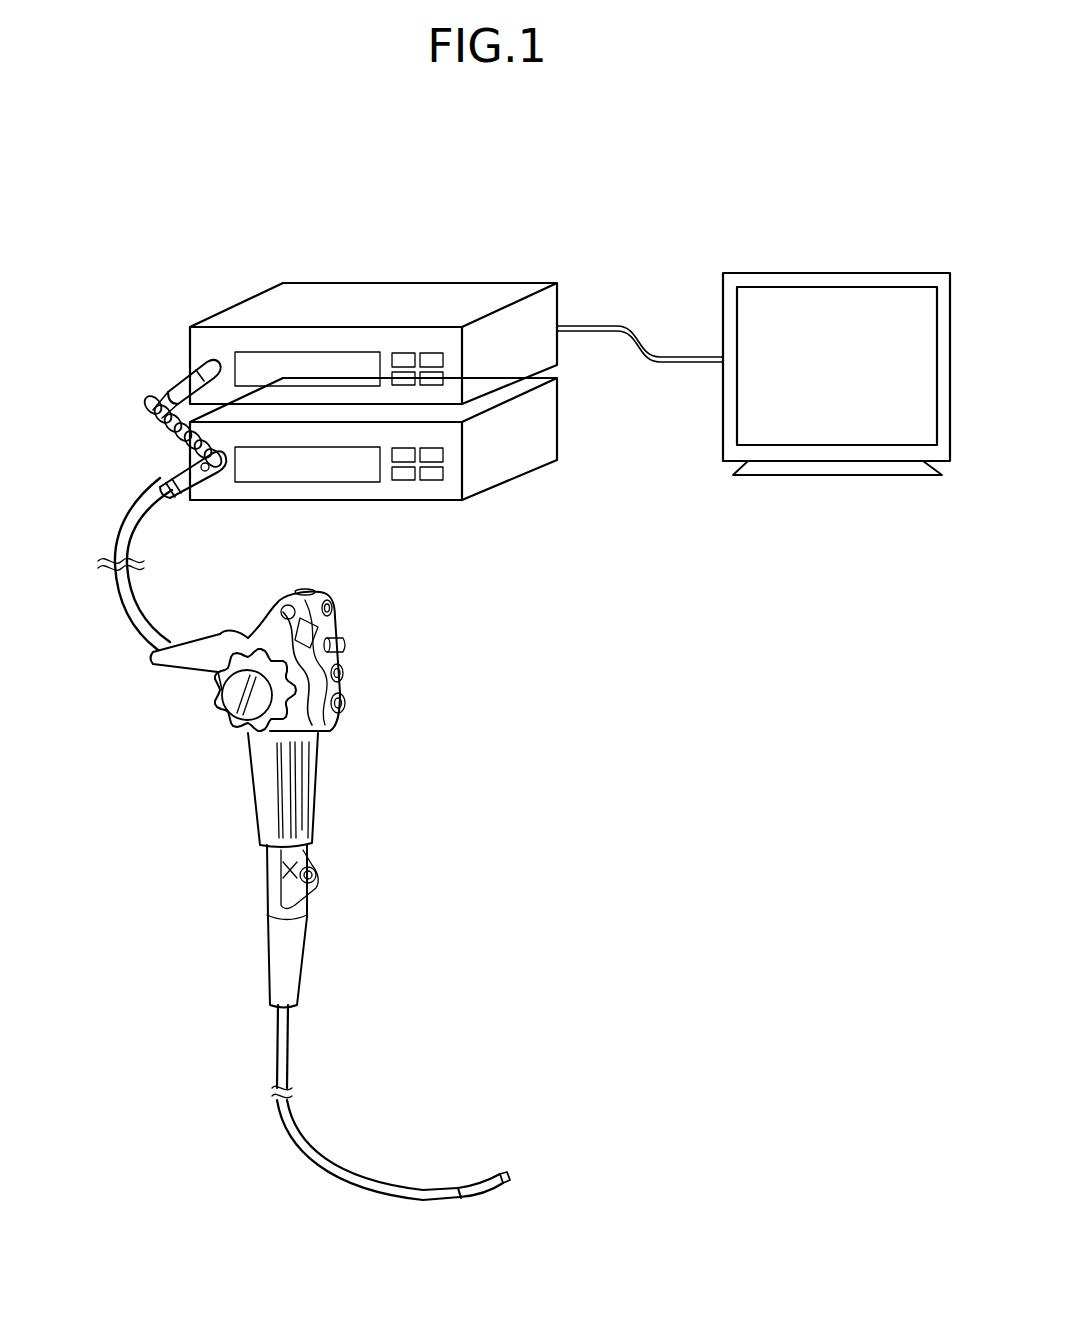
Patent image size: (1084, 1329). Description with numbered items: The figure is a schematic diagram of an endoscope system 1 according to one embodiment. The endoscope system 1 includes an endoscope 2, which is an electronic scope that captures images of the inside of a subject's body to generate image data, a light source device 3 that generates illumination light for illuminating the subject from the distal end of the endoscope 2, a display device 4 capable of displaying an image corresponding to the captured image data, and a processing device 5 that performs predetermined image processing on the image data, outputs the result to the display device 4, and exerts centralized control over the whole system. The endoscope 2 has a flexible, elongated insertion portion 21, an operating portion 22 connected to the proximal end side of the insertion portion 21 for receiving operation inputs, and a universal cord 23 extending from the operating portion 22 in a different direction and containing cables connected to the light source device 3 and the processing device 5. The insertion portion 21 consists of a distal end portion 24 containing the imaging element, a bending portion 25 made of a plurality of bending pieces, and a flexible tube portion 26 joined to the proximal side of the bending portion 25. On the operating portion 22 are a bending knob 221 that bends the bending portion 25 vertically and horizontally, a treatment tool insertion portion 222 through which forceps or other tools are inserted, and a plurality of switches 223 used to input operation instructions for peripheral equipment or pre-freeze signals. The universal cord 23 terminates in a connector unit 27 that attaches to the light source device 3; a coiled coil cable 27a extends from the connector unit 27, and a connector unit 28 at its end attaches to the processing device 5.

The endoscope system 1 is at (878, 198).
The endoscope 2 is at (396, 615).
The light source device 3 is at (545, 420).
The display device 4 is at (838, 282).
The processing device 5 is at (526, 286).
The insertion portion 21 is at (346, 1164).
The operating portion 22 is at (286, 604).
The universal cord 23 is at (112, 598).
The distal end portion 24 is at (505, 1194).
The bending portion 25 is at (480, 1182).
The flexible tube portion 26 is at (333, 1176).
The connector unit 27 is at (193, 478).
The coil cable 27a is at (157, 423).
The connector unit 28 is at (202, 357).
The bending knob 221 is at (223, 713).
The treatment tool insertion portion 222 is at (318, 873).
The switches 223 is at (327, 578).